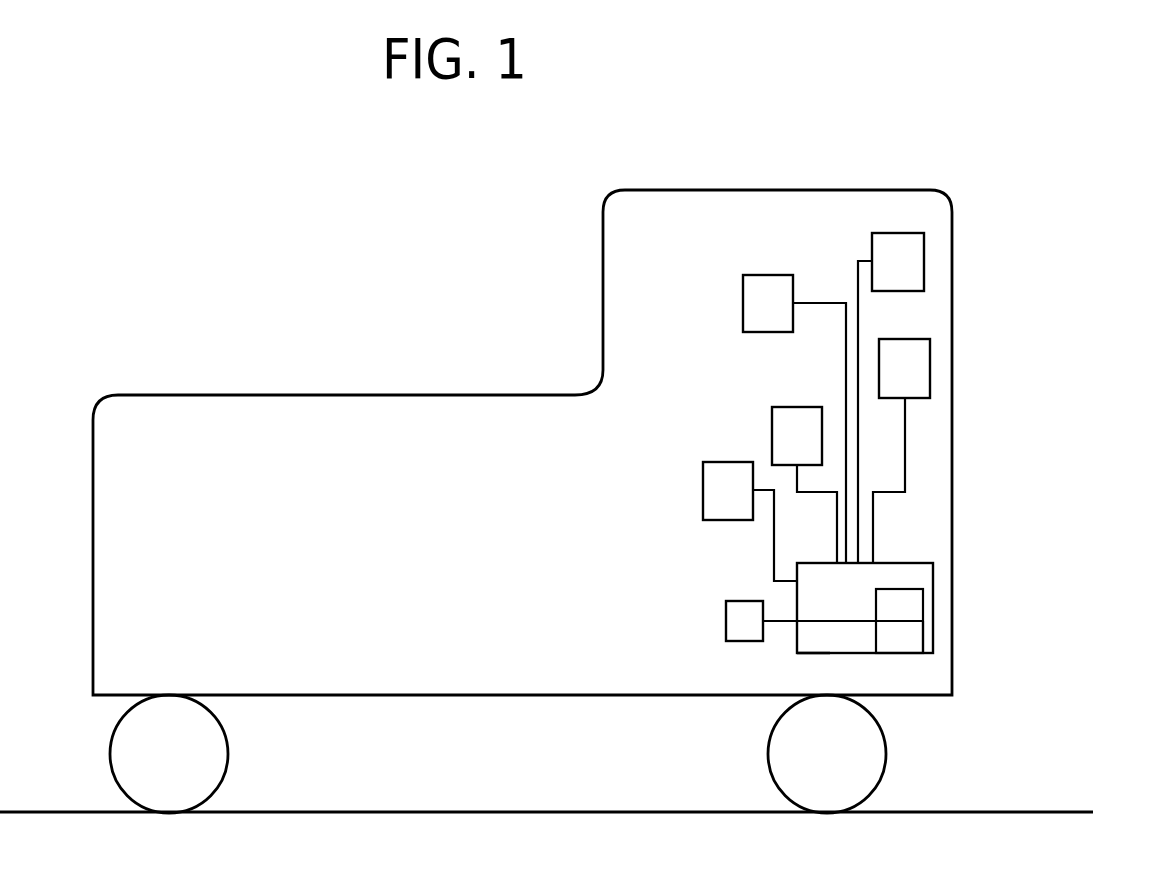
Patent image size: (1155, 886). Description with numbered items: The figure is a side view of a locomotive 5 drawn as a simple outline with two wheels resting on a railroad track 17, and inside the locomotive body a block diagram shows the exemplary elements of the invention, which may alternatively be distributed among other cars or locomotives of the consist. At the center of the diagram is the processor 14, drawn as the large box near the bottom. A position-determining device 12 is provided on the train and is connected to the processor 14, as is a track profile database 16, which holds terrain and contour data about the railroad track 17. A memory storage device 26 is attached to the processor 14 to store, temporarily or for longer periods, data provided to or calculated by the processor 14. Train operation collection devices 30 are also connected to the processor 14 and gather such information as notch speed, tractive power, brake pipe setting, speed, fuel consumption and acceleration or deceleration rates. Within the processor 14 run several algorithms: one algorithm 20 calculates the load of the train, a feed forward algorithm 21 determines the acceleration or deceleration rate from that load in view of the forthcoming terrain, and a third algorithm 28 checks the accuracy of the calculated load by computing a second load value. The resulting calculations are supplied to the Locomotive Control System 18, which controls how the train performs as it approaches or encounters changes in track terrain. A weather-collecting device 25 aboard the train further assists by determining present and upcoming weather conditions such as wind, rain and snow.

The locomotive 5 is at (946, 189).
The position-determining device 12 is at (930, 366).
The processor 14 is at (933, 590).
The track profile database 16 is at (772, 407).
The railroad track 17 is at (1045, 812).
The Locomotive Control System 18 is at (703, 470).
The algorithm 20 is at (923, 633).
The feed forward algorithm 21 is at (810, 655).
The weather-collecting device 25 is at (924, 264).
The memory storage device 26 is at (726, 621).
The third algorithm 28 is at (908, 586).
The train operation collection devices 30 is at (743, 304).